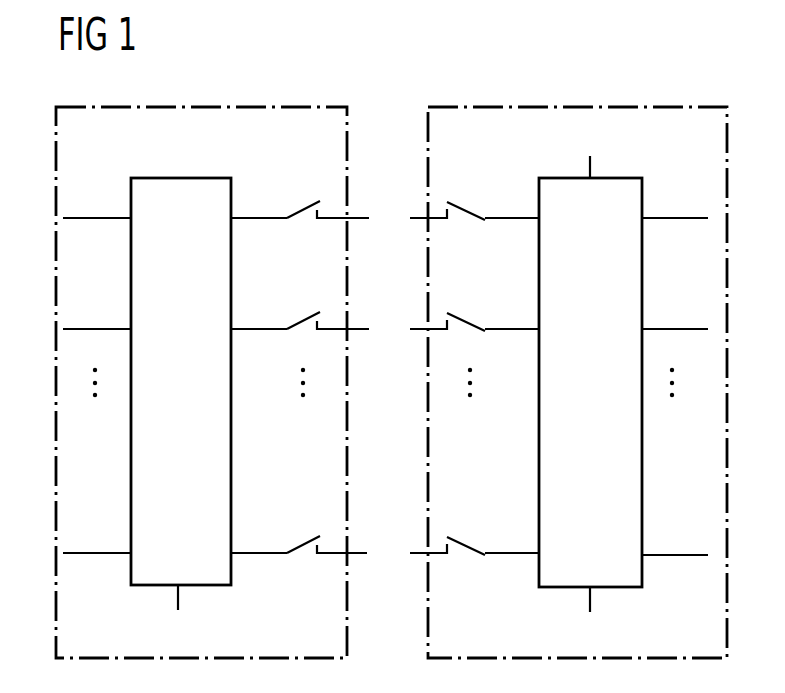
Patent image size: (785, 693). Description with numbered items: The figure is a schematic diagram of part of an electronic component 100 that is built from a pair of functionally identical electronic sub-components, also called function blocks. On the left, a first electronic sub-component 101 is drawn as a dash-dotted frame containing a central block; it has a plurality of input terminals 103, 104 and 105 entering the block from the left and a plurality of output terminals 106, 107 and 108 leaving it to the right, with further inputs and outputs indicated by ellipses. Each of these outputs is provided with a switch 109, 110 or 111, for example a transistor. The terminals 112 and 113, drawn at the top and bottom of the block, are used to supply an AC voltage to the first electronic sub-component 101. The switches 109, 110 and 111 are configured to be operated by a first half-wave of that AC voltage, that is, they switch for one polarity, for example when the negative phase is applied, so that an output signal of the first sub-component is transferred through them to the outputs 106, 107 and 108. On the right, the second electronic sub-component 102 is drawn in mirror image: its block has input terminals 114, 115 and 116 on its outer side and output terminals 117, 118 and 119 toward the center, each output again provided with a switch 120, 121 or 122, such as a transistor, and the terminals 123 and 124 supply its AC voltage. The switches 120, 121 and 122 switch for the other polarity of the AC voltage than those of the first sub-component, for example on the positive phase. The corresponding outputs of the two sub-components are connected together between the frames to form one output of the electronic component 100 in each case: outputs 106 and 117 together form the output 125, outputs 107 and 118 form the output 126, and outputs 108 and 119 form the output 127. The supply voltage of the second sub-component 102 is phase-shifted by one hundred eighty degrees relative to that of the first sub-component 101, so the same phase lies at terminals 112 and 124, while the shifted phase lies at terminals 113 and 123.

The electronic component 100 is at (394, 104).
The first electronic sub-component 101 is at (224, 106).
The second electronic sub-component 102 is at (600, 107).
The input terminal 103 is at (86, 218).
The input terminal 104 is at (88, 329).
The input terminal 105 is at (86, 553).
The output terminal 106 is at (253, 218).
The output terminal 107 is at (253, 329).
The output terminal 108 is at (253, 553).
The switch 109 is at (308, 200).
The switch 110 is at (308, 312).
The switch 111 is at (303, 537).
The supply terminal 112 is at (183, 178).
The supply terminal 113 is at (178, 610).
The input terminal 114 is at (661, 218).
The input terminal 115 is at (661, 329).
The input terminal 116 is at (661, 555).
The output terminal 117 is at (492, 218).
The output terminal 118 is at (491, 329).
The output terminal 119 is at (490, 553).
The switch 120 is at (465, 203).
The switch 121 is at (464, 314).
The switch 122 is at (464, 538).
The supply terminal 123 is at (590, 162).
The supply terminal 124 is at (590, 612).
The output of the electronic component 125 is at (408, 230).
The output of the electronic component 126 is at (408, 341).
The output of the electronic component 127 is at (407, 566).